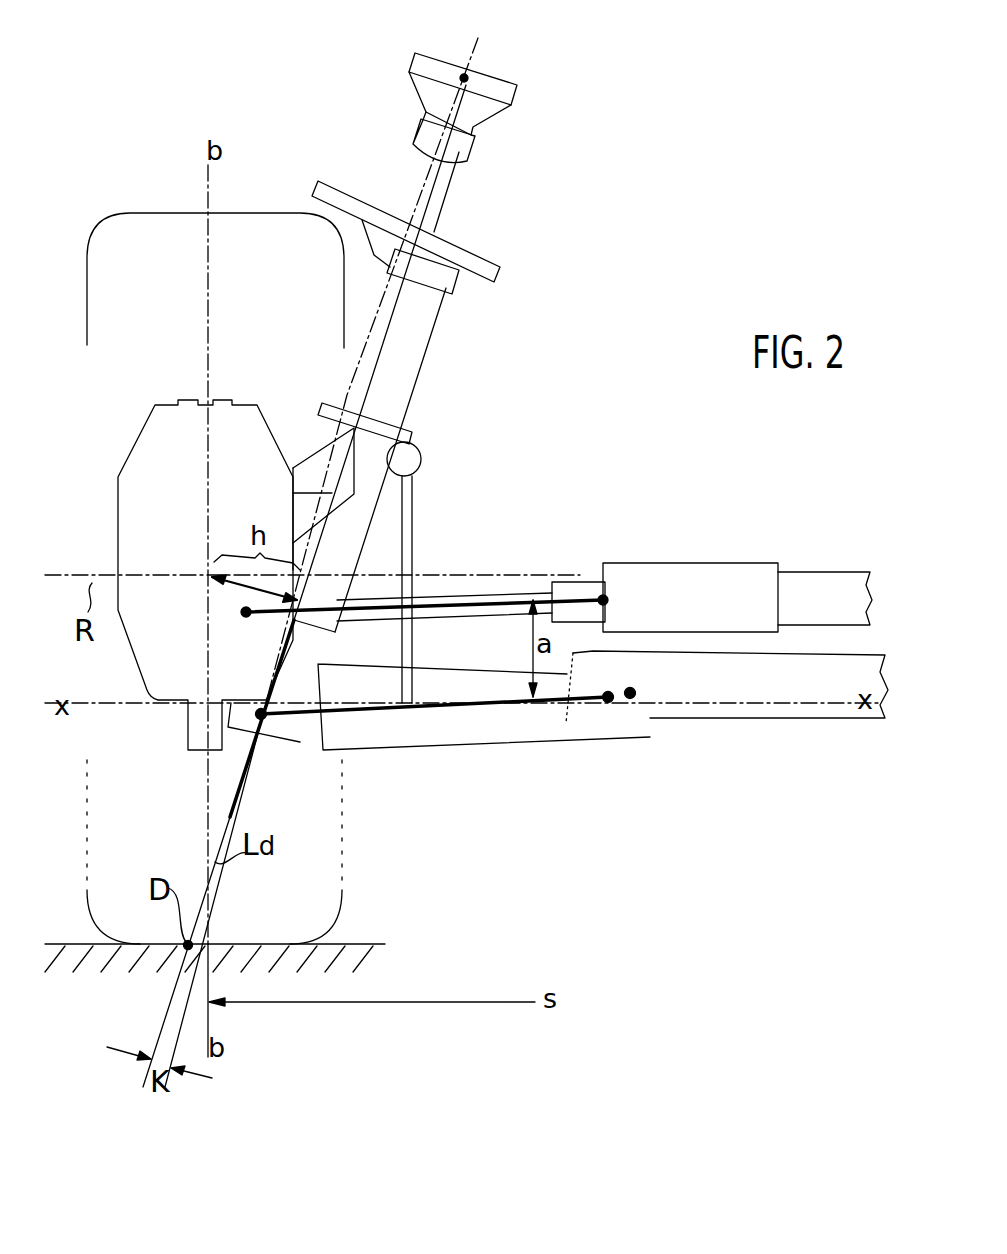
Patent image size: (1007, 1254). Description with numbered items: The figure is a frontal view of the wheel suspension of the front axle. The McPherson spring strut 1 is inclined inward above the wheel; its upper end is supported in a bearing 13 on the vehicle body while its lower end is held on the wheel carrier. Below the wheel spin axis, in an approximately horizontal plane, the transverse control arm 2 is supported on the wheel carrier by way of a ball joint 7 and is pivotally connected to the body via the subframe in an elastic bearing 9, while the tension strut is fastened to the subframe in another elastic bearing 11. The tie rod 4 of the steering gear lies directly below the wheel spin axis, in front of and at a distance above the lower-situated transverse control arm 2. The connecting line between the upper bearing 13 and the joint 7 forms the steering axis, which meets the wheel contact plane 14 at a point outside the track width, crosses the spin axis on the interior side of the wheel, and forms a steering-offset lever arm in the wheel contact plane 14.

The McPherson spring strut 1 is at (412, 322).
The transverse control arm 2 is at (394, 748).
The tie rod 4 is at (498, 595).
The ball joint 7 is at (265, 720).
The elastic bearing 9 is at (606, 705).
The elastic bearing 11 is at (634, 692).
The bearing 13 is at (472, 80).
The wheel contact plane 14 is at (92, 955).